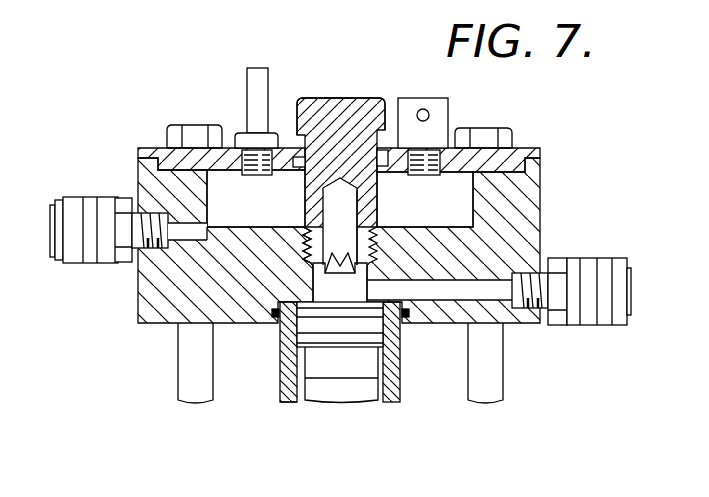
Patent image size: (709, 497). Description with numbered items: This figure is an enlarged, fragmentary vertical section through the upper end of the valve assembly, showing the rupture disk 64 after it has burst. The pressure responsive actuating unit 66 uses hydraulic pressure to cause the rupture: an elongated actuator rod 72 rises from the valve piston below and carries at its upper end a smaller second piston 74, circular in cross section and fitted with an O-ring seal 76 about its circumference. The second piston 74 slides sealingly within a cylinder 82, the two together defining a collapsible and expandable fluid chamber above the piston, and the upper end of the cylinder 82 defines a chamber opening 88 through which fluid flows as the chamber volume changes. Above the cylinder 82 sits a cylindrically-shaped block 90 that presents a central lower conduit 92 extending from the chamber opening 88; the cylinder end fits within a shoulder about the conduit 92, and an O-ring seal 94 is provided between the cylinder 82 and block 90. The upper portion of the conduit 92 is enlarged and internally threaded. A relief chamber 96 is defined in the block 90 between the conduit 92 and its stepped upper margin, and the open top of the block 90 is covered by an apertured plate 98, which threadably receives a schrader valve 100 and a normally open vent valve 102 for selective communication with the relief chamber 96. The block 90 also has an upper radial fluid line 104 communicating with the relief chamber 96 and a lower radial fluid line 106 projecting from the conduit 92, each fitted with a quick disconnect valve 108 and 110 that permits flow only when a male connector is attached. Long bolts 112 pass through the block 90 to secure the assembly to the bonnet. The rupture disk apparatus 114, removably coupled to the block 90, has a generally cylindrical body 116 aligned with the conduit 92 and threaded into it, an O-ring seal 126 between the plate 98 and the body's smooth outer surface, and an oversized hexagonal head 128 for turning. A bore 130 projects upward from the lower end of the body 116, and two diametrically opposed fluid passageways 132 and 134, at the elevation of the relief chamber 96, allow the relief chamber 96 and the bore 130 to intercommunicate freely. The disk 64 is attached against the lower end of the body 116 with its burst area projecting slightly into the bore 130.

The rupture disk 64 is at (336, 258).
The pressure responsive actuating unit 66 is at (275, 403).
The actuator rod 72 is at (333, 386).
The second piston 74 is at (305, 346).
The O-ring seal 76 is at (343, 332).
The cylinder 82 is at (388, 387).
The chamber opening 88 is at (303, 315).
The block 90 is at (541, 206).
The lower conduit 92 is at (320, 292).
The O-ring seal 94 is at (408, 310).
The relief chamber 96 is at (213, 181).
The apertured plate 98 is at (158, 157).
The schrader valve 100 is at (250, 80).
The normally open vent valve 102 is at (442, 117).
The upper radial fluid line 104 is at (200, 231).
The lower radial fluid line 106 is at (502, 294).
The quick disconnect valve 108 is at (90, 262).
The quick disconnect valve 110 is at (618, 262).
The long bolts 112 is at (511, 140).
The rupture disk apparatus 114 is at (333, 91).
The body 116 is at (373, 104).
The O-ring seal 126 is at (293, 158).
The hexagonal head 128 is at (296, 137).
The bore 130 is at (349, 207).
The fluid passageway 132 is at (307, 232).
The fluid passageway 134 is at (379, 228).